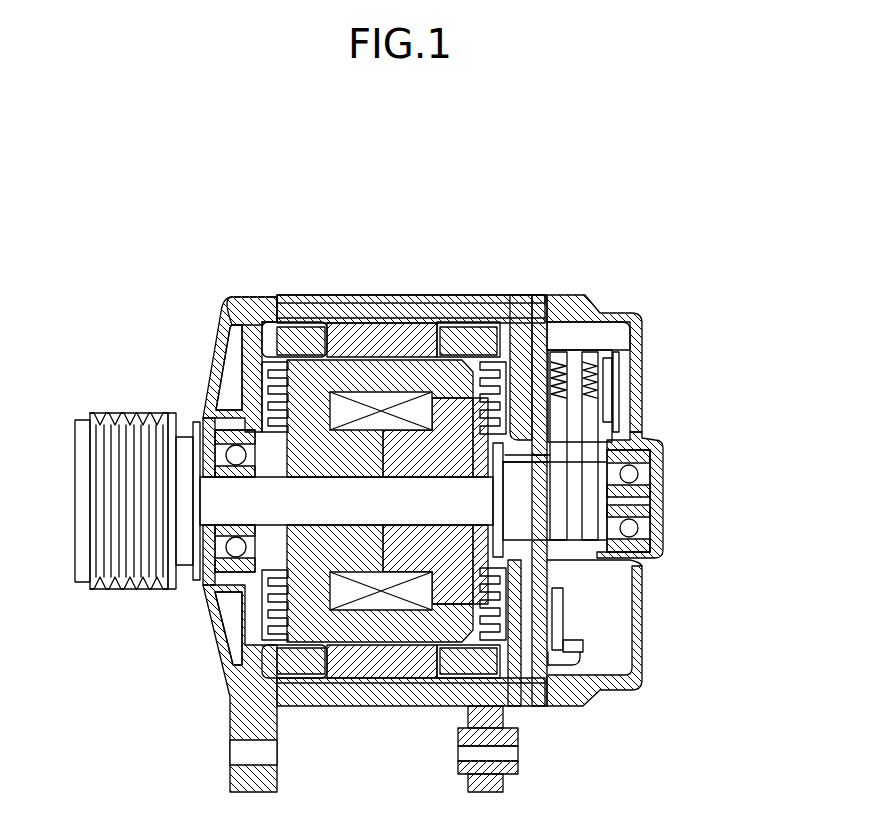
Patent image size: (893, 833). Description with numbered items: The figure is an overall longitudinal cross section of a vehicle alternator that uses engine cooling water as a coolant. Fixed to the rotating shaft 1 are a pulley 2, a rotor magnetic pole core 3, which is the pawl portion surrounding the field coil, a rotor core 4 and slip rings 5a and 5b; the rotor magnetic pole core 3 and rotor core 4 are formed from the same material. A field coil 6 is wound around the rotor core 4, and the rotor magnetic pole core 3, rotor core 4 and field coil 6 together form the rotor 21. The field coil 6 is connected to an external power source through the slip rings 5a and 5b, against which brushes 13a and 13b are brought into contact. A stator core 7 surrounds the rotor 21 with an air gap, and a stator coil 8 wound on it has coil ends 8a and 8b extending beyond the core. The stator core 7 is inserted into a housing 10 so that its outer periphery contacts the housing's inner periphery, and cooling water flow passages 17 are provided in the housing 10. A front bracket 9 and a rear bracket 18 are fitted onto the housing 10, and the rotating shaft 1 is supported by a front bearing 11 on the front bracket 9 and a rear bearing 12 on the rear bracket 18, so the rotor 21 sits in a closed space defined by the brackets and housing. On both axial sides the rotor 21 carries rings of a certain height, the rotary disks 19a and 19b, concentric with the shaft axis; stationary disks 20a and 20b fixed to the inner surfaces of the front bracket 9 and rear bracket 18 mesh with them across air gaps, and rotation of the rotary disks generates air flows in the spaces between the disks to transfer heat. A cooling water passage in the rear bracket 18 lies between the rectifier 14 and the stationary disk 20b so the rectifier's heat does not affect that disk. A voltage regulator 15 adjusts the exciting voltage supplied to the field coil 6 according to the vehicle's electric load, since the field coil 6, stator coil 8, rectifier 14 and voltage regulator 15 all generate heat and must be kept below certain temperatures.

The rotating shaft 1 is at (228, 504).
The pulley 2 is at (145, 422).
The rotor magnetic pole core 3 is at (250, 390).
The rotor core 4 is at (330, 457).
The slip ring 5a is at (598, 560).
The slip ring 5b is at (590, 507).
The field coil 6 is at (386, 602).
The stator core 7 is at (376, 342).
The stator coil 8 is at (432, 300).
The coil end 8a is at (305, 350).
The coil end 8b is at (458, 340).
The front bracket 9 is at (250, 303).
The housing 10 is at (345, 300).
The front bearing 11 is at (215, 548).
The rear bearing 12 is at (633, 470).
The brush 13a is at (556, 408).
The brush 13b is at (590, 445).
The rectifier 14 is at (560, 620).
The voltage regulator 15 is at (618, 375).
The cooling water flow passage 17 is at (512, 298).
The rear bracket 18 is at (530, 298).
The rotary disk 19a is at (285, 645).
The rotary disk 19b is at (478, 640).
The stationary disk 20a is at (285, 417).
The stationary disk 20b is at (522, 340).
The rotor 21 is at (250, 590).